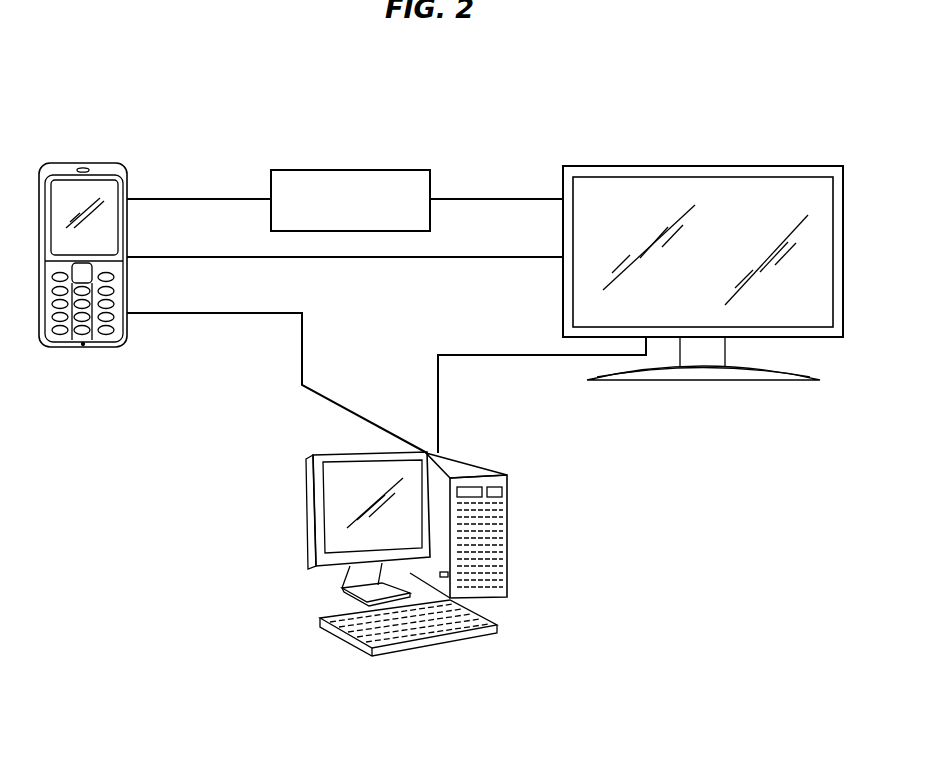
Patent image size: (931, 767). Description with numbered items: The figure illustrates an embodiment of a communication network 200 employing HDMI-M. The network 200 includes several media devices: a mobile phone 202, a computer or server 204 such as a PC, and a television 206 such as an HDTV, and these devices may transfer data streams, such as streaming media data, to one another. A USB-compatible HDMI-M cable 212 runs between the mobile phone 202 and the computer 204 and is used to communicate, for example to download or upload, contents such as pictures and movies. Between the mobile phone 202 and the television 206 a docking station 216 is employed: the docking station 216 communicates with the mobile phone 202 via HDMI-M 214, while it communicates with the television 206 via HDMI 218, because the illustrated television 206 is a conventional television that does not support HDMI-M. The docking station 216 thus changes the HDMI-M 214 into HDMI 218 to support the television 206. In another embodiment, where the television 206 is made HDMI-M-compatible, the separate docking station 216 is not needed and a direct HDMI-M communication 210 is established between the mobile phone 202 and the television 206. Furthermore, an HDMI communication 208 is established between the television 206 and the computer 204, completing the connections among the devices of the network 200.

The communication network 200 is at (697, 97).
The mobile phone 202 is at (64, 162).
The computer 204 is at (516, 463).
The television 206 is at (822, 165).
The HDMI communication 208 is at (527, 358).
The direct HDMI-M communication 210 is at (424, 258).
The USB-compatible HDMI-M cable 212 is at (302, 338).
The HDMI-M 214 is at (203, 200).
The docking station 216 is at (400, 170).
The HDMI 218 is at (510, 200).